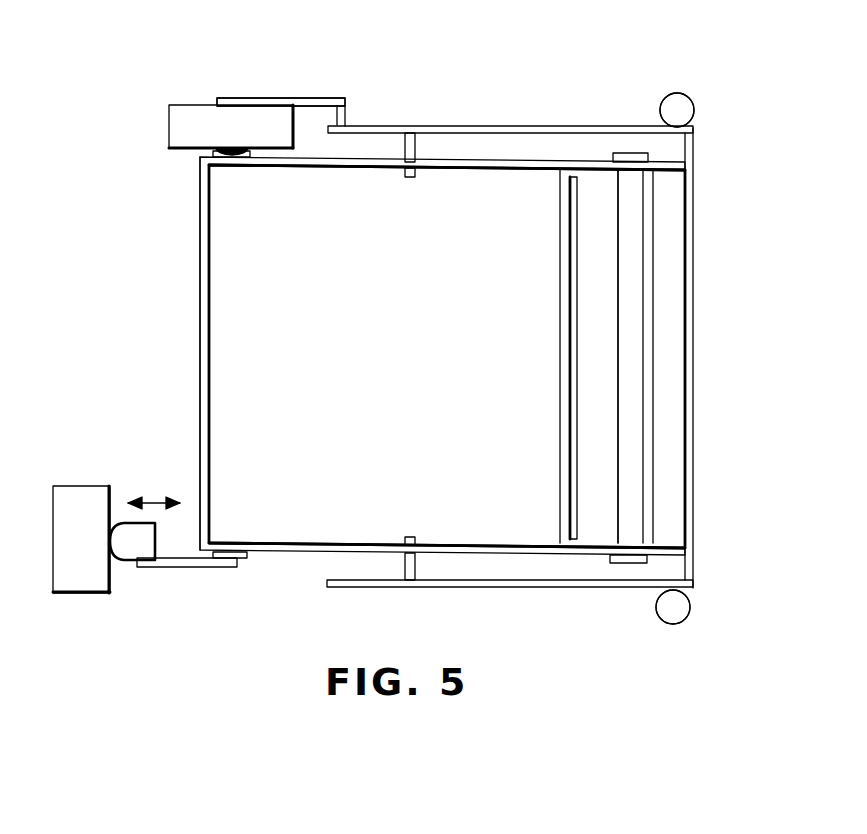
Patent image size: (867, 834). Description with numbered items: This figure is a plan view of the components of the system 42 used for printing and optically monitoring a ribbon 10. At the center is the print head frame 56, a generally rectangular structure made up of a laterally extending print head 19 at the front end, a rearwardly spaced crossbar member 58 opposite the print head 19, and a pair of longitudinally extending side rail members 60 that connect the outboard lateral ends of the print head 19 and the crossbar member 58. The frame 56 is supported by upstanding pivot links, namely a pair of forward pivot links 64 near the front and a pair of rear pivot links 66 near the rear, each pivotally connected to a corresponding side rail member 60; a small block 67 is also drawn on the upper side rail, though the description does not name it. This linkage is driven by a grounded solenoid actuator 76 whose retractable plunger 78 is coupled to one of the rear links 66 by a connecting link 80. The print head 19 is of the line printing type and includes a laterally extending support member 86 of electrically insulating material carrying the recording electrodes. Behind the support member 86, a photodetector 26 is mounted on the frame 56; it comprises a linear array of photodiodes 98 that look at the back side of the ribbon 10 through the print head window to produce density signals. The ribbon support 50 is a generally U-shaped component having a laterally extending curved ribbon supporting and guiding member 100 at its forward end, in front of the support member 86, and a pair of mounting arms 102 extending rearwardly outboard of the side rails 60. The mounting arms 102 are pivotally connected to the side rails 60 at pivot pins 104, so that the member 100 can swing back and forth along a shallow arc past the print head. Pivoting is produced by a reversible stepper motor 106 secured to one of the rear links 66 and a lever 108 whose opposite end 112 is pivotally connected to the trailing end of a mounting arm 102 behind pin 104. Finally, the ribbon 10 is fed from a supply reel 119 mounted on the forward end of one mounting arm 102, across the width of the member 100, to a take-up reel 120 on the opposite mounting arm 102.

The ribbon 10 is at (693, 124).
The print head 19 is at (610, 232).
The photodetector 26 is at (563, 330).
The system 42 is at (468, 95).
The ribbon support 50 is at (619, 105).
The print head frame 56 is at (178, 295).
The crossbar member 58 is at (203, 397).
The side rail members 60 is at (522, 166).
The forward pivot links 64 is at (618, 562).
The rear pivot links 66 is at (213, 153).
The upper block 67 is at (616, 153).
The solenoid actuator 76 is at (93, 588).
The retractable plunger 78 is at (128, 558).
The connecting link 80 is at (178, 567).
The support member 86 is at (632, 391).
The photodiodes 98 is at (572, 433).
The ribbon supporting and guiding member 100 is at (688, 241).
The mounting arms 102 is at (545, 126).
The pivot pins 104 is at (412, 174).
The stepper motor 106 is at (185, 108).
The lever 108 is at (300, 103).
The opposite end of lever 112 is at (343, 118).
The supply reel 119 is at (677, 105).
The take-up reel 120 is at (676, 618).